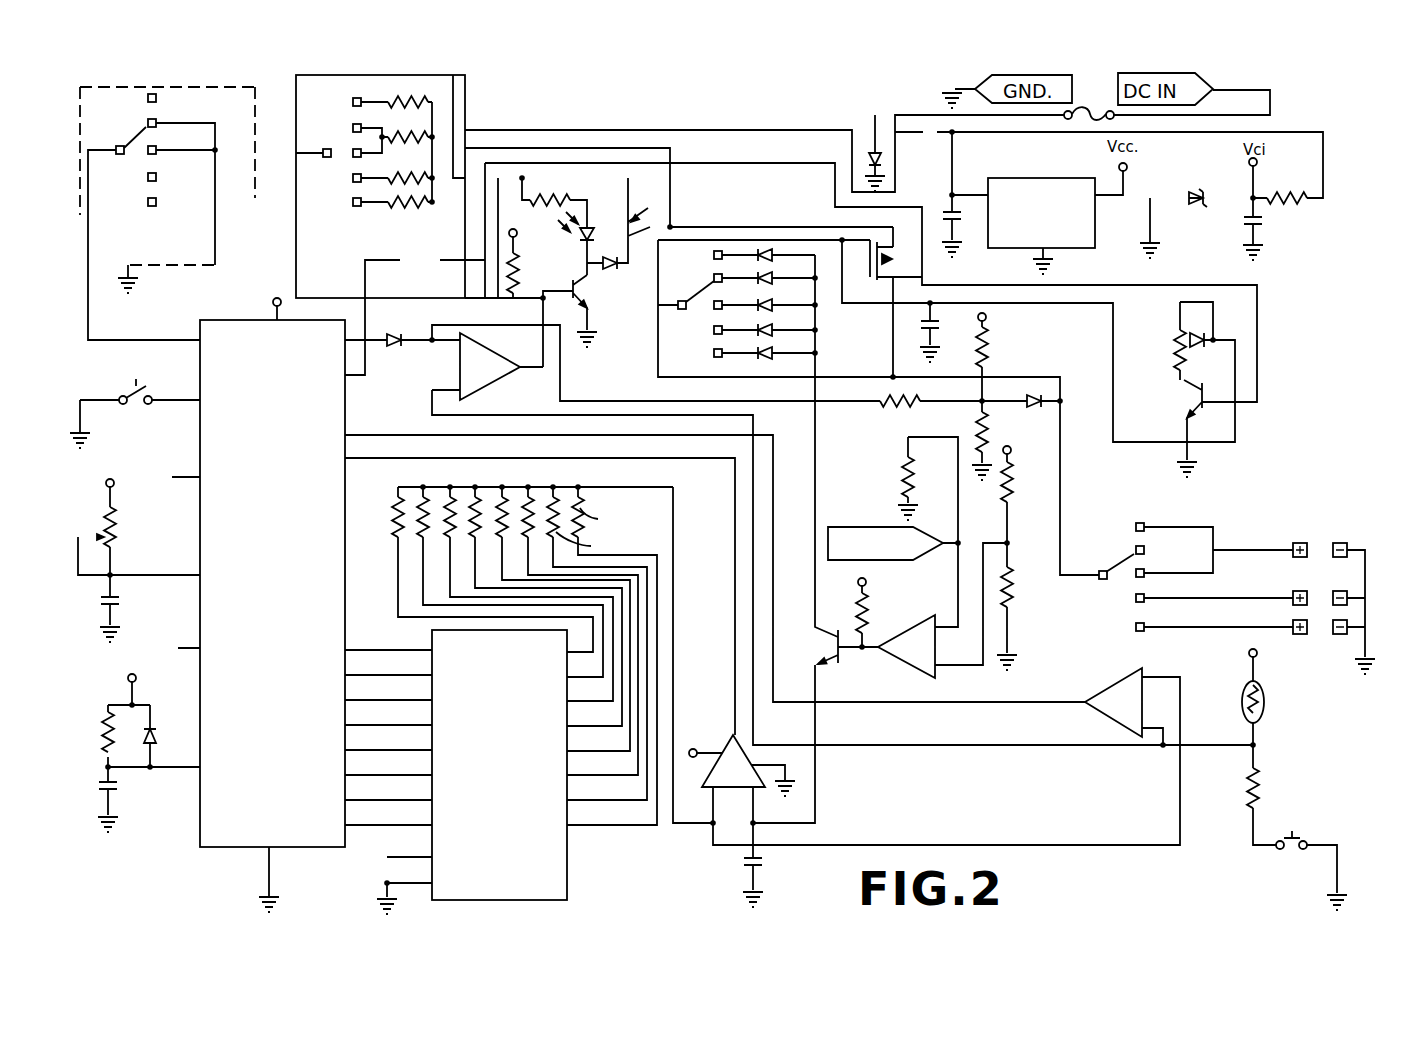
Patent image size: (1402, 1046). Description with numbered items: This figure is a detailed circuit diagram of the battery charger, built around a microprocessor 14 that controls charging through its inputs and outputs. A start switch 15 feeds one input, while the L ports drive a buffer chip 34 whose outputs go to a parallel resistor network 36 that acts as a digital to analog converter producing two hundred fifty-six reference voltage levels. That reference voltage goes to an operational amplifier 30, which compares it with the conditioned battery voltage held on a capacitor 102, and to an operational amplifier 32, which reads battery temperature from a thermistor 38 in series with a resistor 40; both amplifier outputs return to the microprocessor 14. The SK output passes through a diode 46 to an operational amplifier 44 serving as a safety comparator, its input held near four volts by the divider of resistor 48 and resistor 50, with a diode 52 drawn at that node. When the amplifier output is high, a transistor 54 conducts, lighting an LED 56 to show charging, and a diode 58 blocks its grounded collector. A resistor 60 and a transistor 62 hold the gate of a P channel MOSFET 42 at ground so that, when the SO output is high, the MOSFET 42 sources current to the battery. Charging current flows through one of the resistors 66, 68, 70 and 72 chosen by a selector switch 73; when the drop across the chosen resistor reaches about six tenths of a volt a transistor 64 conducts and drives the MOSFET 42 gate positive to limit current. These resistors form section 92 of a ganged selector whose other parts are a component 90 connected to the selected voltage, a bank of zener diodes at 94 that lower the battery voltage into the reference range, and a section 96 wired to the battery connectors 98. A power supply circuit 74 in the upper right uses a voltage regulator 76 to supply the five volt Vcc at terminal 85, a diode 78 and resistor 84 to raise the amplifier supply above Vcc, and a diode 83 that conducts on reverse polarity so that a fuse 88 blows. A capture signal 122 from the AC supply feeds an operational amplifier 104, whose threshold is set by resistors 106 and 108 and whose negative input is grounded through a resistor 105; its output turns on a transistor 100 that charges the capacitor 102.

The microprocessor 14 is at (237, 838).
The start switch 15 is at (147, 393).
The operational amplifier 30 is at (730, 750).
The operational amplifier 32 is at (1123, 700).
The buffer chip 34 is at (553, 850).
The parallel resistor network 36 is at (385, 518).
The thermistor 38 is at (1260, 690).
The resistor 40 is at (1262, 785).
The P channel MOSFET 42 is at (873, 260).
The operational amplifier 44 is at (480, 358).
The diode 46 is at (388, 338).
The resistor 48 is at (975, 430).
The resistor 50 is at (992, 345).
The diode 52 is at (1038, 407).
The transistor 54 is at (574, 286).
The LED 56 is at (578, 235).
The diode 58 is at (614, 258).
The resistor 60 is at (1184, 333).
The transistor 62 is at (1200, 397).
The transistor 64 is at (637, 220).
The resistor 66 is at (386, 103).
The resistor 68 is at (380, 132).
The resistor 70 is at (412, 179).
The resistor 72 is at (395, 204).
The selector switch 73 is at (348, 145).
The power supply circuit 74 is at (915, 93).
The voltage regulator 76 is at (1055, 195).
The diode 78 is at (1205, 186).
The diode 83 is at (870, 152).
The resistor 84 is at (1297, 202).
The supply terminal 85 is at (1120, 167).
The fuse 88 is at (1089, 100).
The selector switch component 90 is at (185, 104).
The selector switch section 92 is at (445, 107).
The selector switch portion with zener diodes 94 is at (737, 243).
The selector switch section 96 is at (1122, 547).
The battery connectors 98 is at (1318, 535).
The transistor 100 is at (808, 647).
The capacitor 102 is at (762, 858).
The operational amplifier 104 is at (920, 637).
The resistor 105 is at (905, 475).
The resistor 106 is at (1016, 494).
The resistor 108 is at (1010, 620).
The capture signal 122 is at (878, 528).